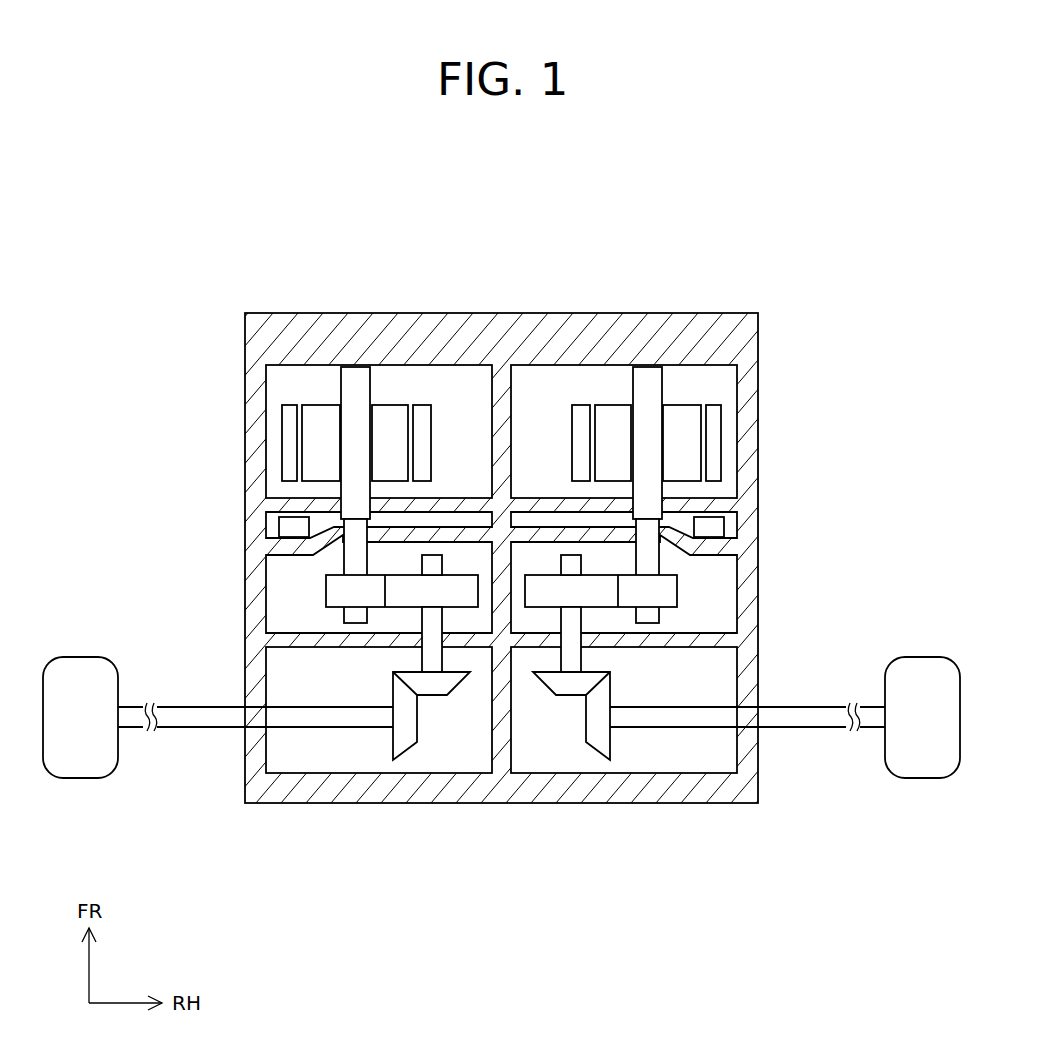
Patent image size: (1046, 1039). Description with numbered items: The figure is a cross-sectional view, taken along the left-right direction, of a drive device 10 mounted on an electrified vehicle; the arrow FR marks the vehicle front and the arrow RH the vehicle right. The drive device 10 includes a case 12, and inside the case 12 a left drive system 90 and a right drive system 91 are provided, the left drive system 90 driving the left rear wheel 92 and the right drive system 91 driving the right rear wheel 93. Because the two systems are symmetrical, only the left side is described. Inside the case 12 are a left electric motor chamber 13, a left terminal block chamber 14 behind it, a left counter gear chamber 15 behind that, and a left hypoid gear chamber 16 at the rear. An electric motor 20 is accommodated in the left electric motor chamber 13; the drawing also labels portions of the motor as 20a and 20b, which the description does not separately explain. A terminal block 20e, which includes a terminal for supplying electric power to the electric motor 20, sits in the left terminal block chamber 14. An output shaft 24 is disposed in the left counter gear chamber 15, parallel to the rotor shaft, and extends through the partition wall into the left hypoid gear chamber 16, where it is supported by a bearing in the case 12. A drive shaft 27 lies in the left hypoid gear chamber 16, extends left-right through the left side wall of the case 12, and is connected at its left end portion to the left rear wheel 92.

The drive device 10 is at (213, 197).
The case 12 is at (737, 342).
The left electric motor chamber 13 is at (288, 380).
The left terminal block chamber 14 is at (272, 528).
The left counter gear chamber 15 is at (288, 594).
The left hypoid gear chamber 16 is at (298, 752).
The electric motor 20 is at (401, 401).
The stator 20a is at (387, 418).
The rotor 20b is at (422, 417).
The terminal block 20e is at (297, 519).
The output shaft 24 is at (433, 651).
The drive shaft 27 is at (325, 717).
The left drive system 90 is at (319, 538).
The right drive system 91 is at (663, 282).
The left rear wheel 92 is at (72, 655).
The right rear wheel 93 is at (922, 672).